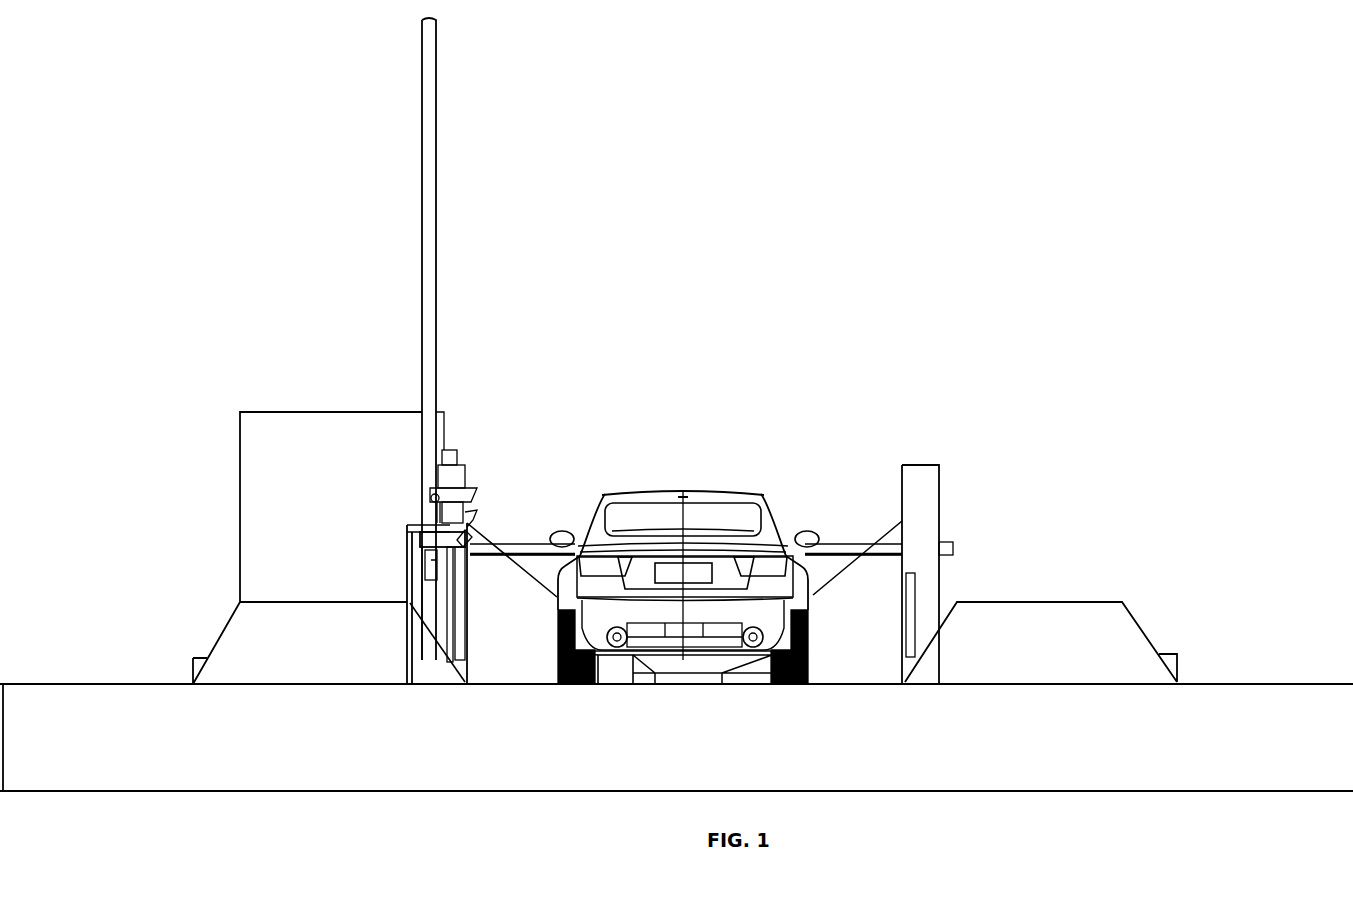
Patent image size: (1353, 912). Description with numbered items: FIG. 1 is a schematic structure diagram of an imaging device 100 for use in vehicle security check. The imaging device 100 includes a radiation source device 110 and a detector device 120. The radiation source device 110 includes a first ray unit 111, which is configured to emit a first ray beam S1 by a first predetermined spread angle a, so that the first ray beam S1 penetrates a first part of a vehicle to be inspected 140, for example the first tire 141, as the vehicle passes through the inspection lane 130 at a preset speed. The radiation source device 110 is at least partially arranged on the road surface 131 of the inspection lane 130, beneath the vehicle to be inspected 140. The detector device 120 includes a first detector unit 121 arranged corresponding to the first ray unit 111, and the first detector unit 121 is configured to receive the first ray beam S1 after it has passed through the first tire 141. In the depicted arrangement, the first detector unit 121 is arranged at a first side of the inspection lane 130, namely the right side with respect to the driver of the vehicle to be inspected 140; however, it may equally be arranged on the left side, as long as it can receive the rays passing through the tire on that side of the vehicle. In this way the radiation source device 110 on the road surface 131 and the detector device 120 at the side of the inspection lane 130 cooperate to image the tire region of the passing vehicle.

The imaging device 100 is at (490, 362).
The radiation source device 110 is at (693, 688).
The first ray unit 111 is at (630, 683).
The detector device 120 is at (462, 563).
The first detector unit 121 is at (462, 622).
The inspection lane 130 is at (671, 523).
The road surface 131 is at (533, 687).
The vehicle to be inspected 140 is at (713, 493).
The first tire 141 is at (557, 650).
The first ray beam S1 is at (684, 559).
The first predetermined spread angle a is at (615, 670).